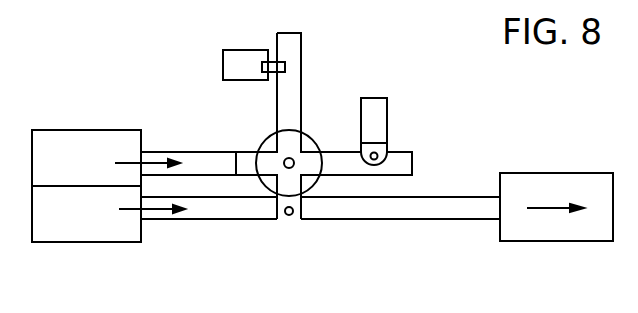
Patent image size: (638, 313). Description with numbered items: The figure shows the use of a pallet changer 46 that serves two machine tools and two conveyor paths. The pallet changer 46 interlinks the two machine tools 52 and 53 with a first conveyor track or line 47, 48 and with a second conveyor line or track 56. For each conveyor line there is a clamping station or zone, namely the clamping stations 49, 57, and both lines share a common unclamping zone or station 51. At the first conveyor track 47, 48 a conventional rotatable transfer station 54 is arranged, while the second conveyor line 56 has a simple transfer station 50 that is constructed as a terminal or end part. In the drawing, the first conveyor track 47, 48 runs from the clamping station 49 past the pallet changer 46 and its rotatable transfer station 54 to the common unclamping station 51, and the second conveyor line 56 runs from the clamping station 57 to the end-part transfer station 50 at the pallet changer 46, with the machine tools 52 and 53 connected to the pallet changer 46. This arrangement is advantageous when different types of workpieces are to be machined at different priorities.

The pallet changer 46 is at (308, 144).
The conveyor track 47 is at (207, 220).
The conveyor track 48 is at (388, 213).
The clamping station 49 is at (74, 243).
The simple transfer station 50 is at (240, 154).
The common unclamping station 51 is at (552, 242).
The machine tool 52 is at (381, 112).
The machine tool 53 is at (242, 58).
The rotatable transfer station 54 is at (285, 220).
The second conveyor line 56 is at (199, 154).
The clamping station 57 is at (73, 141).